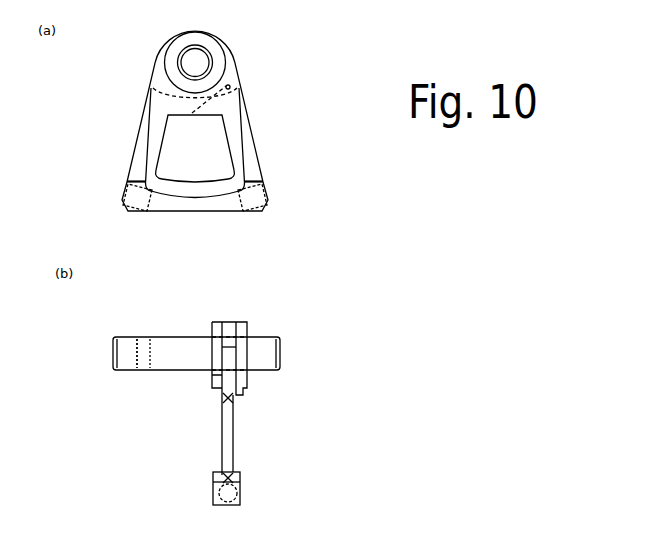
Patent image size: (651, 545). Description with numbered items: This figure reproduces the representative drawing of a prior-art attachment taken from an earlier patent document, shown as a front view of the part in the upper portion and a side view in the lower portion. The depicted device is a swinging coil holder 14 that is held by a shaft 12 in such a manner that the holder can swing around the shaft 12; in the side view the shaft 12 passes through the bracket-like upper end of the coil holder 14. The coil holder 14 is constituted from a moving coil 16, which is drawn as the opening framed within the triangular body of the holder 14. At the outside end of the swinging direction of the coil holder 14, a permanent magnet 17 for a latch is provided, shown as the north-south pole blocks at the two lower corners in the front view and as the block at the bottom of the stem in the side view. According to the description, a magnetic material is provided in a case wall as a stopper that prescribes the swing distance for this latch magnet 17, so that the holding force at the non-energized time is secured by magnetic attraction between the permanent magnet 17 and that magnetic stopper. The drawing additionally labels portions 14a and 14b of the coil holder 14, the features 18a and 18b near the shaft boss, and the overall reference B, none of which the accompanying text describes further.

The shaft 12 is at (179, 362).
The swinging coil holder 14 is at (249, 100).
The boss portion 14a is at (232, 72).
The arm portion 14b is at (255, 165).
The moving coil 16 is at (233, 136).
The permanent magnet for a latch 17 is at (137, 211).
The engaging hole 18a is at (231, 87).
The hidden engaging edge 18b is at (158, 86).
The magnet holder assembly B is at (254, 115).